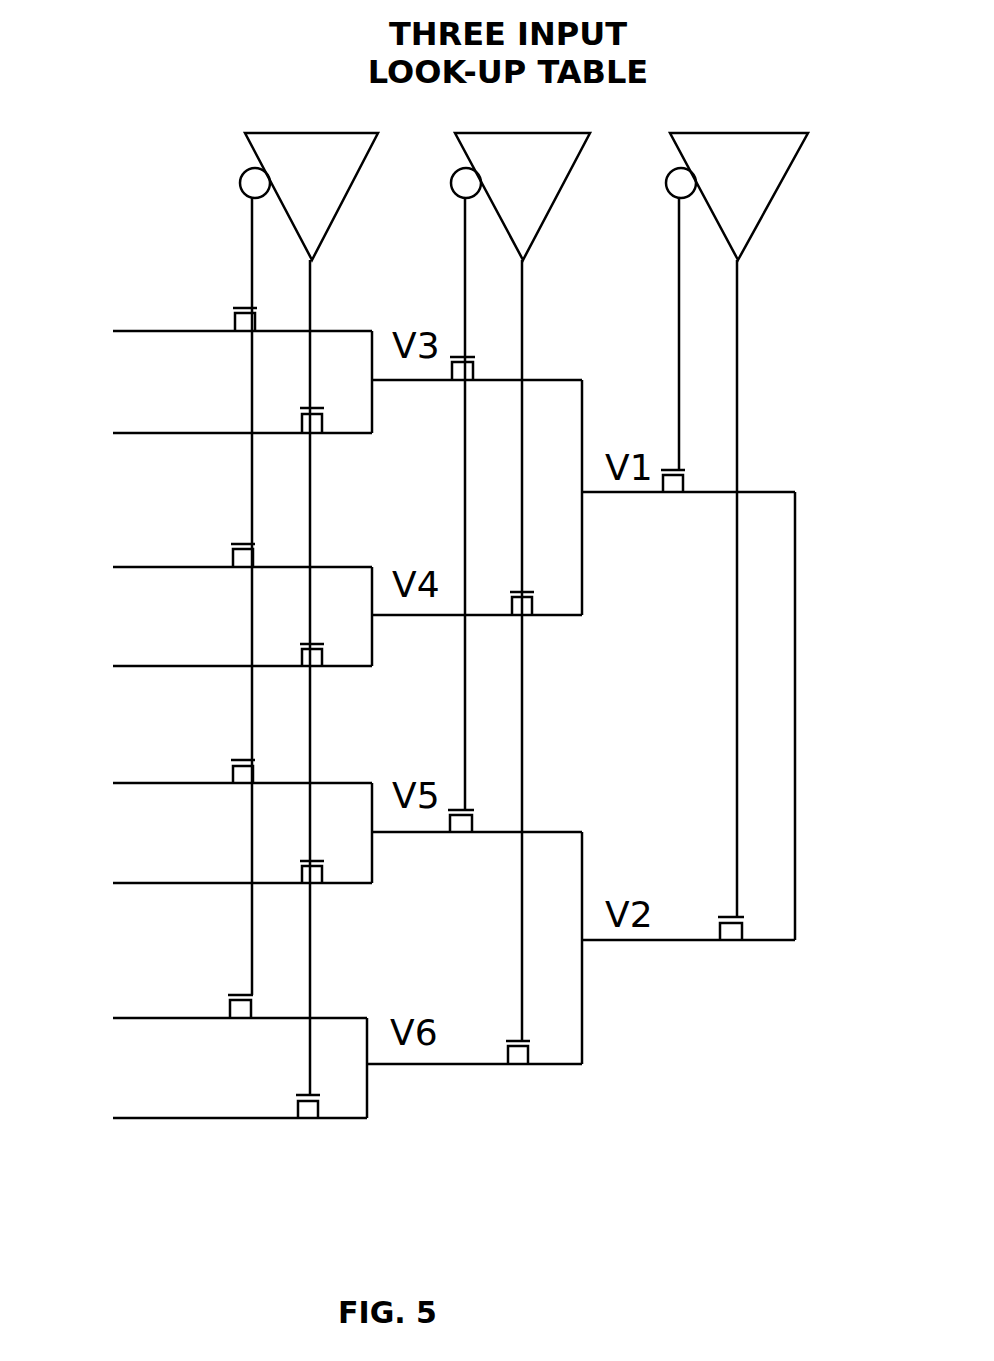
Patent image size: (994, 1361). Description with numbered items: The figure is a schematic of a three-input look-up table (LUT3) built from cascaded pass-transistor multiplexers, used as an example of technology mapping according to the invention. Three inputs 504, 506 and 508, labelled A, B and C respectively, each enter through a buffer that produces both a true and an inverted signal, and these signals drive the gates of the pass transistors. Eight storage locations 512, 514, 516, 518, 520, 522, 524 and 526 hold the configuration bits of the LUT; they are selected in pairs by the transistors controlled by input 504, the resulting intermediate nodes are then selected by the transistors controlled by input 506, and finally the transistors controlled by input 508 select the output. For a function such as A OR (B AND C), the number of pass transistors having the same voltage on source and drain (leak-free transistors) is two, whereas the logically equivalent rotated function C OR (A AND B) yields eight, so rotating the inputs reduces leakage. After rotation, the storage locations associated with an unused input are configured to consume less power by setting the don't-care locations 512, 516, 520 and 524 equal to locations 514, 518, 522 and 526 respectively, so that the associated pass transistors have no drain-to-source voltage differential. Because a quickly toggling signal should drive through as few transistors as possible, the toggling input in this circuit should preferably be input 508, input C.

The input 504 is at (309, 602).
The input 506 is at (520, 575).
The input 508 is at (737, 513).
The storage location 512 is at (217, 323).
The storage location 514 is at (217, 426).
The storage location 516 is at (217, 563).
The storage location 518 is at (217, 663).
The storage location 520 is at (217, 779).
The storage location 522 is at (217, 879).
The storage location 524 is at (215, 1014).
The storage location 526 is at (215, 1112).